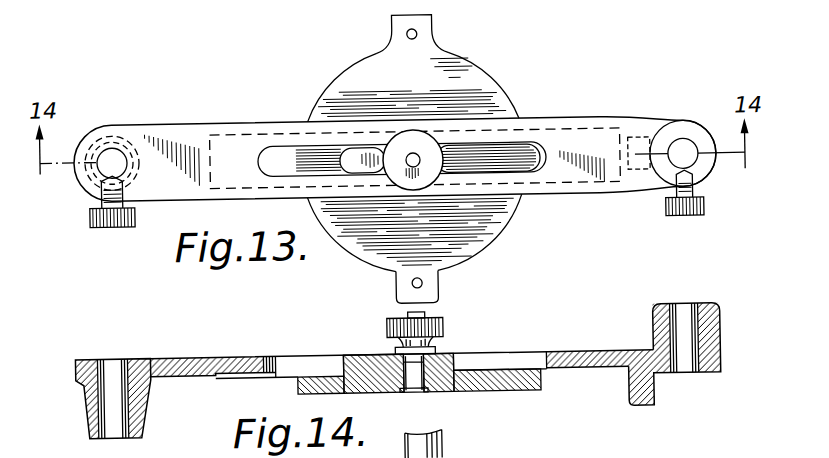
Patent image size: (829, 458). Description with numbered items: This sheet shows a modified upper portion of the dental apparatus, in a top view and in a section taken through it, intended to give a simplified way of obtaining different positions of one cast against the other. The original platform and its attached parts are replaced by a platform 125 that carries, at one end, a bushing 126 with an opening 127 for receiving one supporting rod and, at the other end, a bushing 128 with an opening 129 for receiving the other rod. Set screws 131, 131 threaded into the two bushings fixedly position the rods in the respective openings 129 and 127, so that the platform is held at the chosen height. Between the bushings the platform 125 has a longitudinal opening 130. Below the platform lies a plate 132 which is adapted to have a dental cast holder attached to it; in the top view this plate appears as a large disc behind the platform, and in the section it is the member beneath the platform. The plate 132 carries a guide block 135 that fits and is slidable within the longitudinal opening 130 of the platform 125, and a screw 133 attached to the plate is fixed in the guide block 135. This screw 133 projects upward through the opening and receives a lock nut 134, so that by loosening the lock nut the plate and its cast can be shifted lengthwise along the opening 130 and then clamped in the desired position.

In FIG. 13, the platform 125 is at (598, 131).
In FIG. 14, the platform 125 is at (605, 343).
In FIG. 14, the bushing 126 is at (716, 324).
In FIG. 14, the opening 127 is at (681, 309).
In FIG. 14, the bushing 128 is at (86, 410).
In FIG. 14, the opening 129 is at (113, 358).
In FIG. 13, the longitudinal opening 130 is at (500, 149).
In FIG. 14, the longitudinal opening 130 is at (311, 344).
In FIG. 13, the set screws 131 is at (109, 223).
In FIG. 13, the plate 132 is at (497, 236).
In FIG. 14, the plate 132 is at (528, 389).
In FIG. 13, the screw 133 is at (427, 153).
In FIG. 14, the screw 133 is at (423, 315).
In FIG. 13, the lock nut 134 is at (402, 173).
In FIG. 14, the lock nut 134 is at (443, 326).
In FIG. 13, the guide block 135 is at (358, 150).
In FIG. 14, the guide block 135 is at (378, 342).